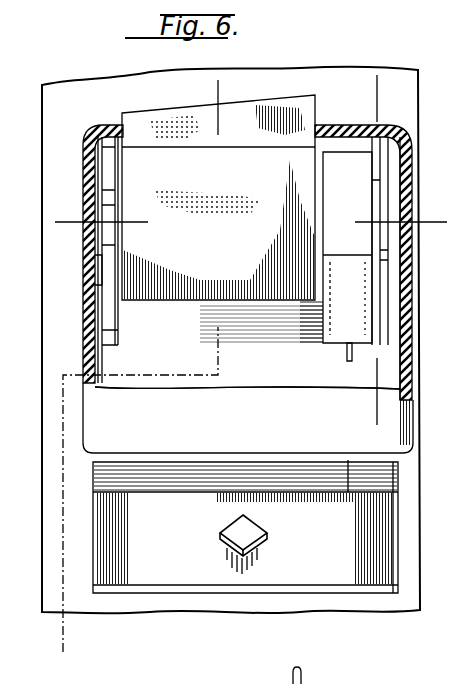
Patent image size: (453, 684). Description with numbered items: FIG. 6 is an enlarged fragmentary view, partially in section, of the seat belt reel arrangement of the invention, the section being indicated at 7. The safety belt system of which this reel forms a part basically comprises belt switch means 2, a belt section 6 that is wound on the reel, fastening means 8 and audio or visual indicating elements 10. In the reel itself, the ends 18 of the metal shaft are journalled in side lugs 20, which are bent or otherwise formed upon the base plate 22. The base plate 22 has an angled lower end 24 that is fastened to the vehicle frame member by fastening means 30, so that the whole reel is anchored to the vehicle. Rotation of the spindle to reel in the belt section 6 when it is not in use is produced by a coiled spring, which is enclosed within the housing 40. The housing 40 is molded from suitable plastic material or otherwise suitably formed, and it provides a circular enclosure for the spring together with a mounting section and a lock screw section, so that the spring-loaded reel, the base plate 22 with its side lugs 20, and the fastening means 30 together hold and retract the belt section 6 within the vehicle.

The belt switch means 2 is at (106, 421).
The belt section 6 is at (255, 128).
The section line 7- 7 is at (240, 92).
The fastening means 8 is at (352, 85).
The audio or visual indicating elements 10 is at (62, 250).
The ends of the metal shaft 18 is at (395, 208).
The side lugs 20 is at (112, 325).
The base plate 22 is at (272, 362).
The angled lower end 24 is at (180, 547).
The fastening means 30 is at (255, 526).
The housing 40 is at (355, 198).